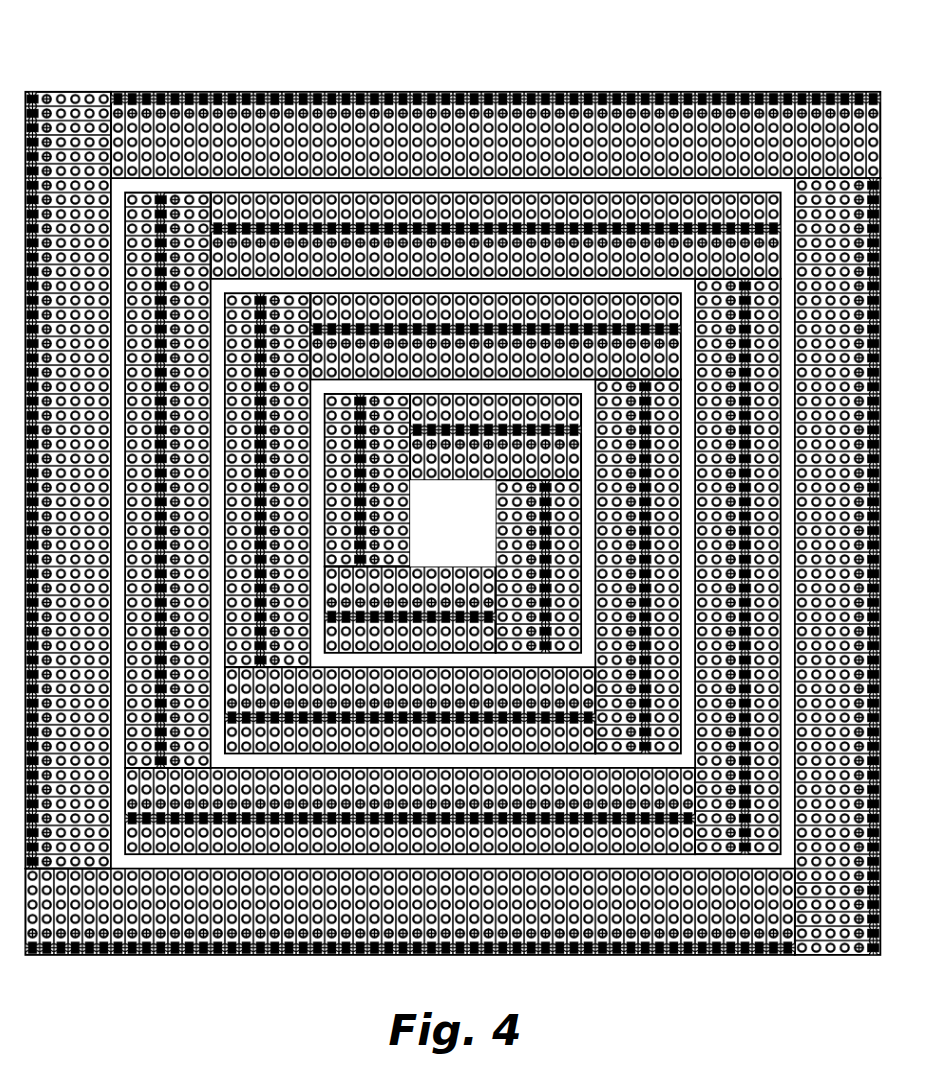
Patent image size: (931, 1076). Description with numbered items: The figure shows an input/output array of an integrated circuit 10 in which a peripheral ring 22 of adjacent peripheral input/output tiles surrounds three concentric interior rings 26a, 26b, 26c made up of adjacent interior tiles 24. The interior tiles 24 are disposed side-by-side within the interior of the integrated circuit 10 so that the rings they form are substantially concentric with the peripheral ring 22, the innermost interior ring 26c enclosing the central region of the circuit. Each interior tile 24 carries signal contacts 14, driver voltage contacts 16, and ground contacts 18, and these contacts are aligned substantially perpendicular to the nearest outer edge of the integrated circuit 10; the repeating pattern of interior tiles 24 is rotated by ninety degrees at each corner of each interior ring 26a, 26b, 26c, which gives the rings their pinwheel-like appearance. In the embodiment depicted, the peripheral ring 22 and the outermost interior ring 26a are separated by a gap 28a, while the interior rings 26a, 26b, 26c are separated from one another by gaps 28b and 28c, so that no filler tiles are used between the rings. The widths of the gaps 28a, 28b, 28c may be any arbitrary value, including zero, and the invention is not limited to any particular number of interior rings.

The integrated circuit 10 is at (467, 527).
The signal contacts 14 is at (703, 850).
The driver voltage contacts 16 is at (752, 850).
The ground contacts 18 is at (730, 850).
The peripheral ring 22 is at (782, 76).
The interior tiles 24 is at (182, 192).
The interior ring 26a is at (460, 187).
The interior ring 26b is at (456, 282).
The interior ring 26c is at (452, 380).
The gap 28a is at (451, 530).
The gap 28b is at (221, 287).
The gap 28c is at (321, 381).